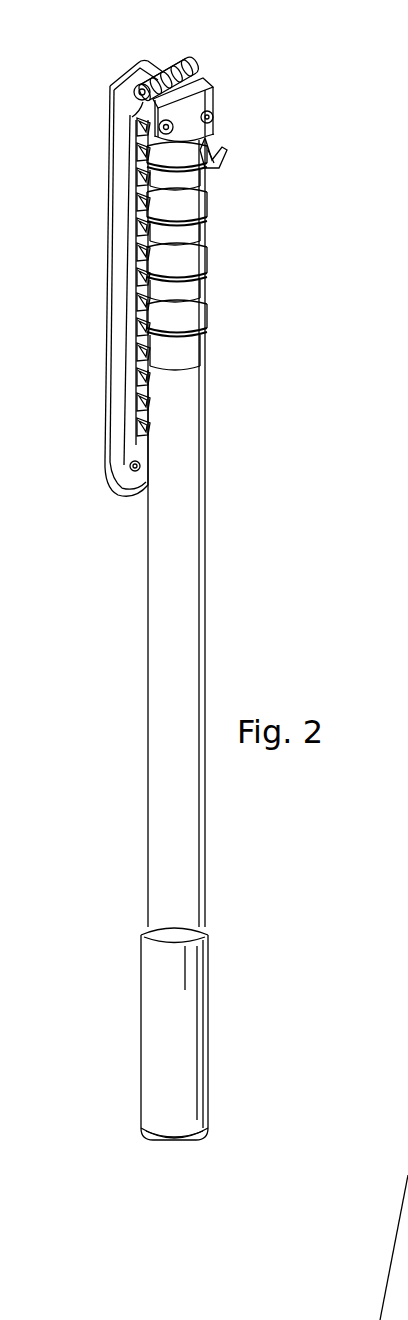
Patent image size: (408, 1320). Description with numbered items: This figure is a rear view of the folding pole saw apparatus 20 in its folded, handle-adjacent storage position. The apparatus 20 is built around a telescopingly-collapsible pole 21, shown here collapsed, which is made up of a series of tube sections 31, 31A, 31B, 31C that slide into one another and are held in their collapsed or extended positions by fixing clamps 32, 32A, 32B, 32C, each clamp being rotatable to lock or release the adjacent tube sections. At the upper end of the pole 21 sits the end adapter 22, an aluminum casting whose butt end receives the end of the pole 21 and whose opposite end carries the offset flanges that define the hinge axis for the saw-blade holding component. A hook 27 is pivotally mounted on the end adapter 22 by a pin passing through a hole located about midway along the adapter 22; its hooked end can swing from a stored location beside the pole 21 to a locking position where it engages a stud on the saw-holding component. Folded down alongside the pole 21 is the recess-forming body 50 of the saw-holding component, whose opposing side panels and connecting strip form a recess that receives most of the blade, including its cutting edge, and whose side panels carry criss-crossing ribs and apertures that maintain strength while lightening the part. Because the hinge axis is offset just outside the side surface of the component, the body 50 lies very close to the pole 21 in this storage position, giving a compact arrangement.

The pole saw apparatus 20 is at (322, 146).
The pole 21 is at (190, 507).
The end adapter 22 is at (210, 80).
The hook 27 is at (212, 140).
The tube section 31 is at (192, 168).
The fixing clamp 32 is at (196, 190).
The tube section 31A is at (205, 218).
The fixing clamp 32A is at (198, 243).
The tube section 31B is at (205, 273).
The fixing clamp 32B is at (198, 298).
The tube section 31C is at (207, 330).
The fixing clamp 32C is at (200, 353).
The recess-forming body 50 is at (108, 258).